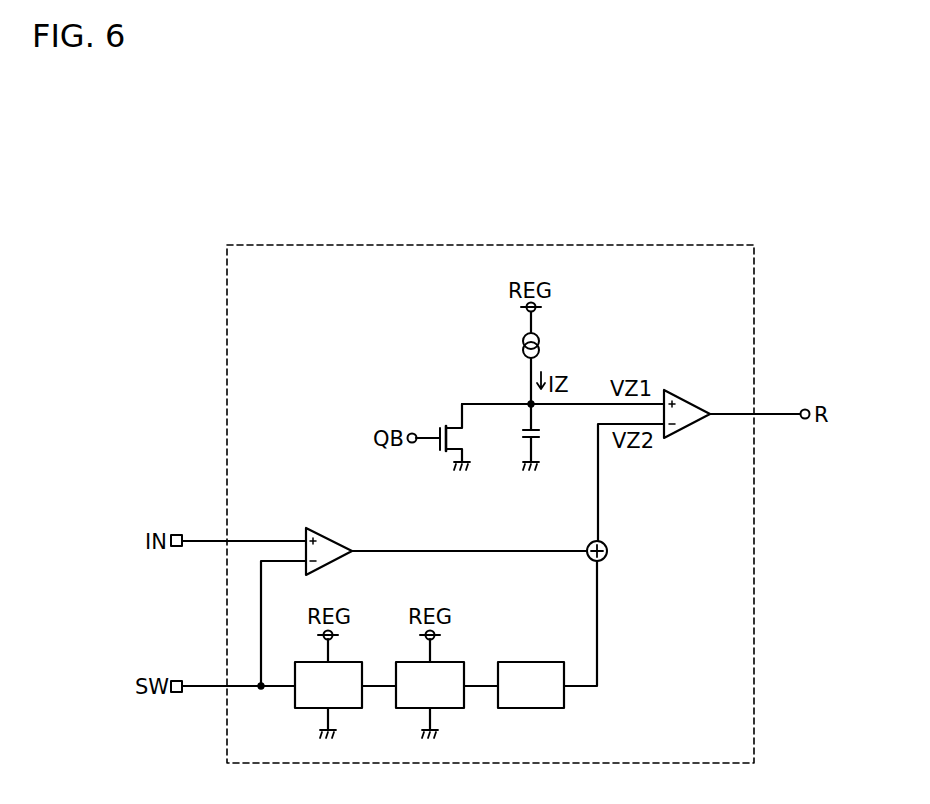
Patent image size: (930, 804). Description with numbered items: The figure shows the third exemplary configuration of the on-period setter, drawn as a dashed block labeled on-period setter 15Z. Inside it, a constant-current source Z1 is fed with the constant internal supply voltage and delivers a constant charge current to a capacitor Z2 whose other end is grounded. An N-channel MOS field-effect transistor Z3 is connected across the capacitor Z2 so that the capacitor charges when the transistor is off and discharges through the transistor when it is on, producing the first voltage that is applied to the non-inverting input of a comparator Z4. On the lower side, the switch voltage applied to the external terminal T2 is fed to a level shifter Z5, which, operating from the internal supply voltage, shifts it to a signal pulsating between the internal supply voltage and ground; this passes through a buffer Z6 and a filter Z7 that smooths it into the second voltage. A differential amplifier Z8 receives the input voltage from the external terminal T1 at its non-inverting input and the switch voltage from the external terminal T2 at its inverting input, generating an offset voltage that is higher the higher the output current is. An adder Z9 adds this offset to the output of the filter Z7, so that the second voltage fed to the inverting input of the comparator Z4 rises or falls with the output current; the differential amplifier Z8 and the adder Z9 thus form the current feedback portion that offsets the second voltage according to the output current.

The on-period setter 15Z is at (492, 245).
The constant-current source Z1 is at (521, 350).
The capacitor Z2 is at (545, 438).
The N-channel MOS field-effect transistor Z3 is at (465, 438).
The comparator Z4 is at (688, 397).
The level shifter Z5 is at (350, 661).
The buffer Z6 is at (452, 661).
The filter Z7 is at (531, 661).
The differential amplifier Z8 is at (330, 536).
The adder Z9 is at (609, 551).
The external terminal T1 is at (177, 534).
The external terminal T2 is at (177, 679).